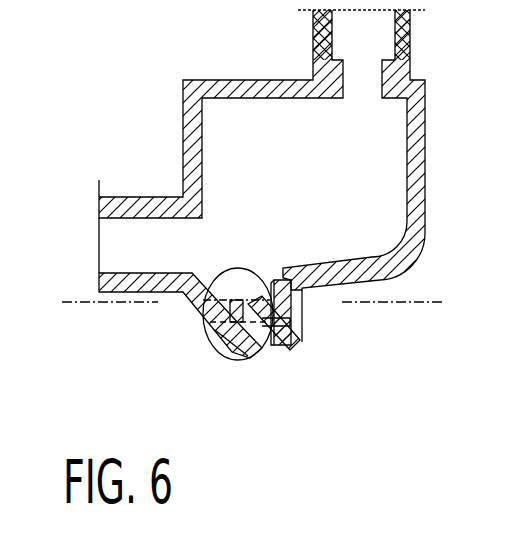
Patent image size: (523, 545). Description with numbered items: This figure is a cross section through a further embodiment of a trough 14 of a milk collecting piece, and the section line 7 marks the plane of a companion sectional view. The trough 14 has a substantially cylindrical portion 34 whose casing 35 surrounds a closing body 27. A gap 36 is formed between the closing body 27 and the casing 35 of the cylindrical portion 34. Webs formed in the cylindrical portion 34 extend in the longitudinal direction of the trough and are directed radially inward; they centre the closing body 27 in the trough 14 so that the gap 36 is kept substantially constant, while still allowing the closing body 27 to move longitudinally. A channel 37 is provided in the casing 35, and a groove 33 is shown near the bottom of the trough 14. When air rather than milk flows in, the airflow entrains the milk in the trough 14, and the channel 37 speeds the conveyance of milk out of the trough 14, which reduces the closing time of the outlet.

The section line VII-VII 7 is at (69, 278).
The trough 14 is at (273, 350).
The closing body 27 is at (237, 288).
The groove 33 is at (242, 356).
The cylindrical portion 34 is at (198, 308).
The casing 35 is at (282, 276).
The gap 36 is at (274, 300).
The channel 37 is at (288, 317).